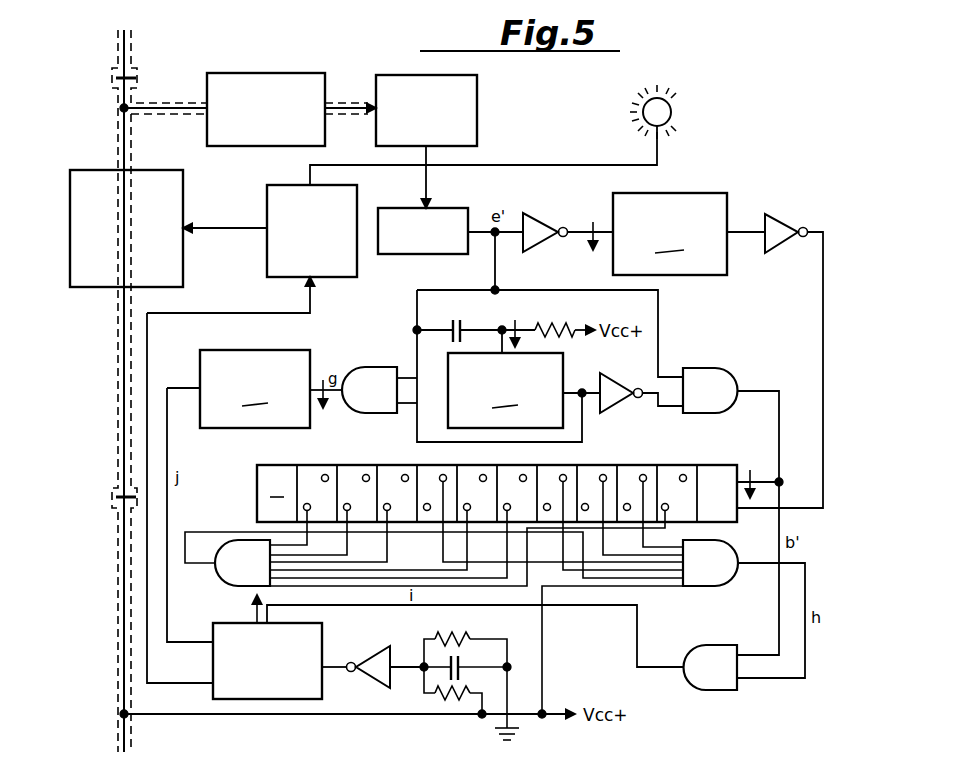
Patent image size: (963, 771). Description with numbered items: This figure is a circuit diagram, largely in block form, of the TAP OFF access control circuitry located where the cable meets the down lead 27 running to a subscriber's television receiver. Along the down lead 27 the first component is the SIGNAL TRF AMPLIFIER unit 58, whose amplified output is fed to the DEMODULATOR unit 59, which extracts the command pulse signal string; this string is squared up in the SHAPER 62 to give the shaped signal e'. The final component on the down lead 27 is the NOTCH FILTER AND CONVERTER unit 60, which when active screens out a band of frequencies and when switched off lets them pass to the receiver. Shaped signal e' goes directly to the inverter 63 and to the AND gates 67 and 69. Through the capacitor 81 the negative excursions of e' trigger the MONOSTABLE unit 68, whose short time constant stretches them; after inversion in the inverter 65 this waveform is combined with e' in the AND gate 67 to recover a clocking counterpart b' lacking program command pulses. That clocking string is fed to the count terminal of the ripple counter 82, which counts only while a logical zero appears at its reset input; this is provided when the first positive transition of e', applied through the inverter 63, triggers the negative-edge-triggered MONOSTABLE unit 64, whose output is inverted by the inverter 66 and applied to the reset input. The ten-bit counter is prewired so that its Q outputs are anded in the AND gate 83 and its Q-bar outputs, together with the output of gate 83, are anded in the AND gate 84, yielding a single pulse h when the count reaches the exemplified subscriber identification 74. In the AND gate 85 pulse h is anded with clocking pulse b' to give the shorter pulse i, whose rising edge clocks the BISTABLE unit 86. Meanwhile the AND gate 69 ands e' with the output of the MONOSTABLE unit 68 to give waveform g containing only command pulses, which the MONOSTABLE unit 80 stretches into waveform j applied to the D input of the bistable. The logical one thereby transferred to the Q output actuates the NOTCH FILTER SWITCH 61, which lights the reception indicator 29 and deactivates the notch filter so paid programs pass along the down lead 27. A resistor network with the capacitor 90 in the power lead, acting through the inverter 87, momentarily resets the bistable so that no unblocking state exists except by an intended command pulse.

The down lead 27 is at (121, 52).
The reception indicator 29 is at (672, 111).
The SIGNAL TRF AMPLIFIER unit 58 is at (228, 90).
The DEMODULATOR unit 59 is at (468, 117).
The NOTCH FILTER AND CONVERTER unit 60 is at (172, 213).
The NOTCH FILTER SWITCH 61 is at (352, 211).
The SHAPER 62 is at (456, 210).
The inverter 63 is at (541, 222).
The MONOSTABLE unit 64 is at (688, 193).
The inverter 65 is at (618, 402).
The inverter 66 is at (781, 225).
The AND gate 67 is at (720, 378).
The MONOSTABLE unit 68 is at (465, 405).
The AND gate 69 is at (368, 372).
The count 74 is at (434, 598).
The MONOSTABLE unit 80 is at (276, 353).
The capacitor 81 is at (457, 325).
The ripple counter 82 is at (720, 457).
The AND gate 83 is at (230, 567).
The AND gate 84 is at (716, 576).
The AND gate 85 is at (716, 646).
The BISTABLE unit 86 is at (316, 669).
The inverter 87 is at (379, 660).
The capacitor 90 is at (423, 656).